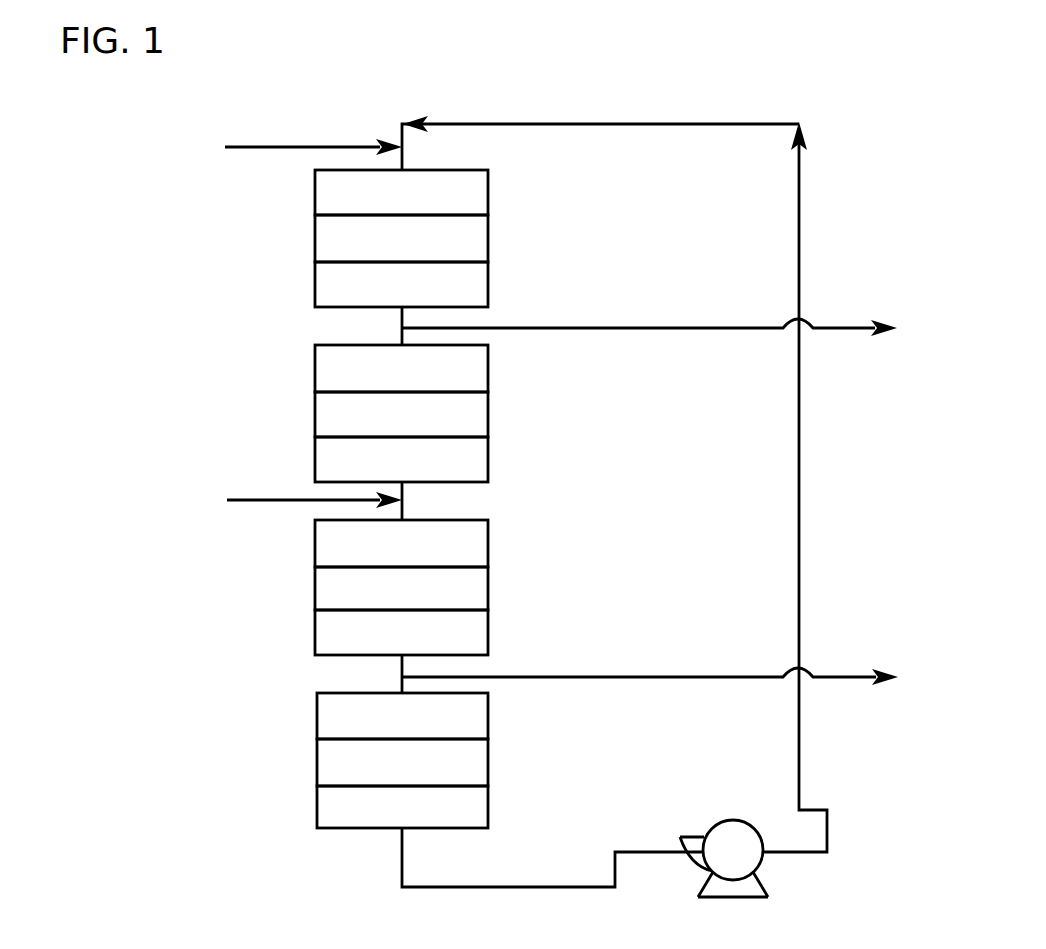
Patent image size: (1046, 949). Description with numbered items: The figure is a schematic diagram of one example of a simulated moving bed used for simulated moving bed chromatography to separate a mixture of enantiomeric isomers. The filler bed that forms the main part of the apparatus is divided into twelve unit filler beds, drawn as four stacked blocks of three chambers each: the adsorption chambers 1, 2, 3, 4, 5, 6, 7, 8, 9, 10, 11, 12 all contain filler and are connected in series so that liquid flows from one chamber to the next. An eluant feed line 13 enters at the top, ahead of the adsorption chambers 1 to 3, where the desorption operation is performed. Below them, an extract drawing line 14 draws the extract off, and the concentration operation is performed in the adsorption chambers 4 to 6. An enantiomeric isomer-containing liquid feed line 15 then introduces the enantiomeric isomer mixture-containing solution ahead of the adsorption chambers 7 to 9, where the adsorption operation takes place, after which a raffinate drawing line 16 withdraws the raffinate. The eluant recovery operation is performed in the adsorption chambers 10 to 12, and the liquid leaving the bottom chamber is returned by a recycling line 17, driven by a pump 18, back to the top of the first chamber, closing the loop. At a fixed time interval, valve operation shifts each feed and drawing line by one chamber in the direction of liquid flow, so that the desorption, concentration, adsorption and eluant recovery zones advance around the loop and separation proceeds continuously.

The adsorption chamber 1 is at (488, 184).
The adsorption chamber 2 is at (488, 232).
The adsorption chamber 3 is at (488, 280).
The adsorption chamber 4 is at (488, 366).
The adsorption chamber 5 is at (488, 412).
The adsorption chamber 6 is at (488, 458).
The adsorption chamber 7 is at (488, 538).
The adsorption chamber 8 is at (488, 583).
The adsorption chamber 9 is at (488, 628).
The adsorption chamber 10 is at (488, 712).
The adsorption chamber 11 is at (488, 758).
The adsorption chamber 12 is at (488, 803).
The eluant feed line 13 is at (293, 147).
The extract drawing line 14 is at (706, 328).
The enantiomeric isomer-containing liquid feed line 15 is at (250, 500).
The raffinate drawing line 16 is at (716, 677).
The recycling line 17 is at (800, 431).
The pump 18 is at (733, 820).